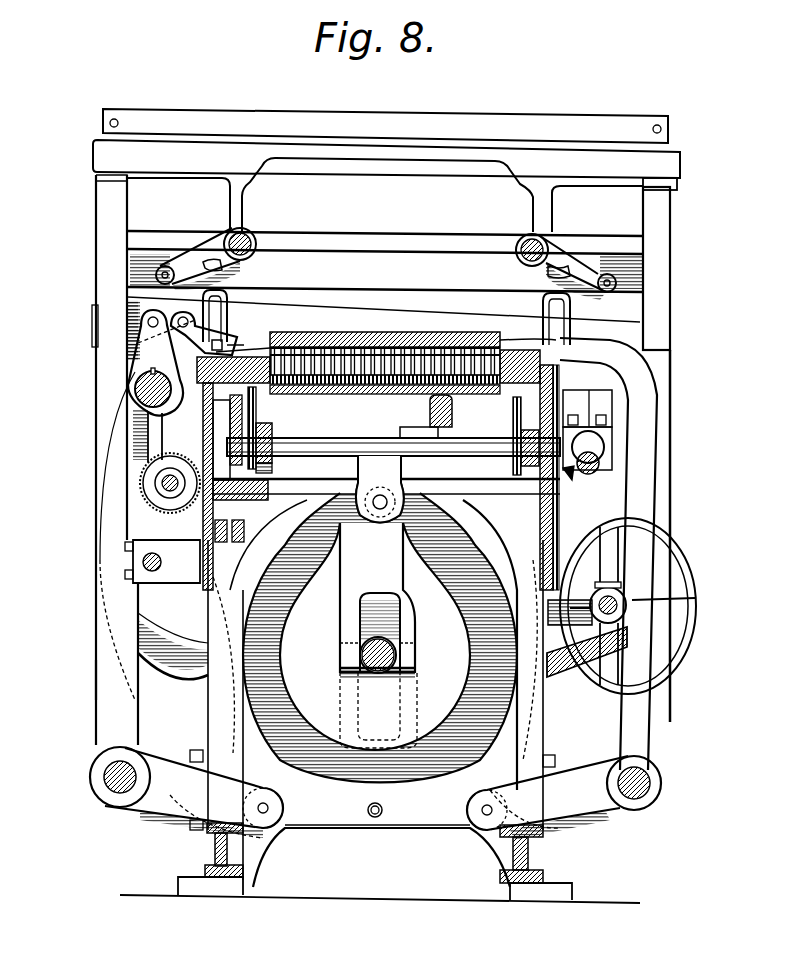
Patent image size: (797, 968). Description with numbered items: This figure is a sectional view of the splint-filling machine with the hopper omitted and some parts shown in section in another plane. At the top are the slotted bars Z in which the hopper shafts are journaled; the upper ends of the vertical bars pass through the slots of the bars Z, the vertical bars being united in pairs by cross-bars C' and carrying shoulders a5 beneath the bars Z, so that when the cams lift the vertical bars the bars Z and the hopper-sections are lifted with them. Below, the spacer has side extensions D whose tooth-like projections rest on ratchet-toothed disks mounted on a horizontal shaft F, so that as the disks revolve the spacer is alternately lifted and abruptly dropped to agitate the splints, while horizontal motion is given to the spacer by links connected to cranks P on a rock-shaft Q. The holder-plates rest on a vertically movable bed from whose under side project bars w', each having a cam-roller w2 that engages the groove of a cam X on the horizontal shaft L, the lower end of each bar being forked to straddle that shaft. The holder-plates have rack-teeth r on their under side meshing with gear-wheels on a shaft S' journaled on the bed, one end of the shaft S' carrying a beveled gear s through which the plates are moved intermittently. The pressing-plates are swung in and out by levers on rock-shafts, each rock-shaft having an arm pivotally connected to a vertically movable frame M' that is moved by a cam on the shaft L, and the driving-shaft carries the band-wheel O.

The shoulders a5 is at (662, 186).
The bars Z is at (375, 152).
The cross-bars C' is at (385, 343).
The cranks P is at (128, 368).
The rock-shaft Q is at (145, 392).
The extensions D is at (225, 467).
The rack-teeth r is at (262, 396).
The horizontal shaft F is at (296, 490).
The shaft S' is at (426, 416).
The bars w' is at (380, 482).
The cam-roller w2 is at (379, 522).
The cam X is at (361, 635).
The horizontal shaft L is at (390, 657).
The beveled gear s is at (575, 478).
The band-wheel O is at (674, 650).
The vertically-movable frame M' is at (381, 845).